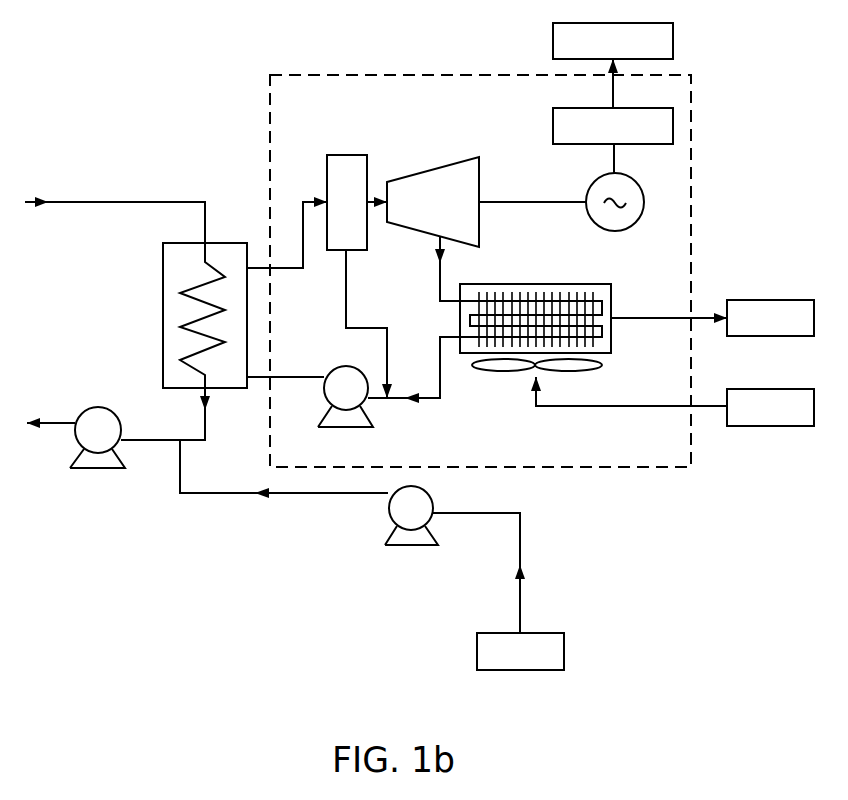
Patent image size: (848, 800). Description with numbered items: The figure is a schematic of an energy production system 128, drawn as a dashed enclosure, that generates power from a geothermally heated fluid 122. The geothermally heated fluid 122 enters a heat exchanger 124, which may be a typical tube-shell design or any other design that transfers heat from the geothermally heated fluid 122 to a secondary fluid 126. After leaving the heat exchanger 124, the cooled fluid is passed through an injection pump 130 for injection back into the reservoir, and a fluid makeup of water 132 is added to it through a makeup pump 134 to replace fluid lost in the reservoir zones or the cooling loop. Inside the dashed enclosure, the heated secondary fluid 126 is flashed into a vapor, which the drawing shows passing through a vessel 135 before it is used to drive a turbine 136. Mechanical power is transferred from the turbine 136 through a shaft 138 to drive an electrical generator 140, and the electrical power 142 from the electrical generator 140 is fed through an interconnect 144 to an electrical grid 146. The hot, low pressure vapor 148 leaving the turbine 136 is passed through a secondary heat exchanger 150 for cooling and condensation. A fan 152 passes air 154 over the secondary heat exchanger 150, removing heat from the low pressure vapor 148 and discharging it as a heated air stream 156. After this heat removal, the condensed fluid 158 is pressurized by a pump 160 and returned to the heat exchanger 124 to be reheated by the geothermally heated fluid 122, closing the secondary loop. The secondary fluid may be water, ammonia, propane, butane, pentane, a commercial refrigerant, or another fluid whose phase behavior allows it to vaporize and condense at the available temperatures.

The geothermally heated fluid 122 is at (125, 202).
The heat exchanger 124 is at (163, 297).
The secondary fluid 126 is at (285, 270).
The energy production system 128 is at (361, 75).
The injection pump 130 is at (100, 407).
The water 132 is at (535, 633).
The makeup pump 134 is at (422, 547).
The separator 135 is at (347, 155).
The turbine 136 is at (447, 162).
The shaft 138 is at (500, 202).
The electrical generator 140 is at (614, 231).
The electrical power 142 is at (615, 160).
The interconnect 144 is at (673, 120).
The electrical grid 146 is at (675, 36).
The low pressure vapor 148 is at (440, 285).
The secondary heat exchanger 150 is at (538, 284).
The fan 152 is at (573, 372).
The air 154 is at (790, 389).
The heated air stream 156 is at (787, 300).
The condensed fluid 158 is at (440, 385).
The pump 160 is at (342, 367).